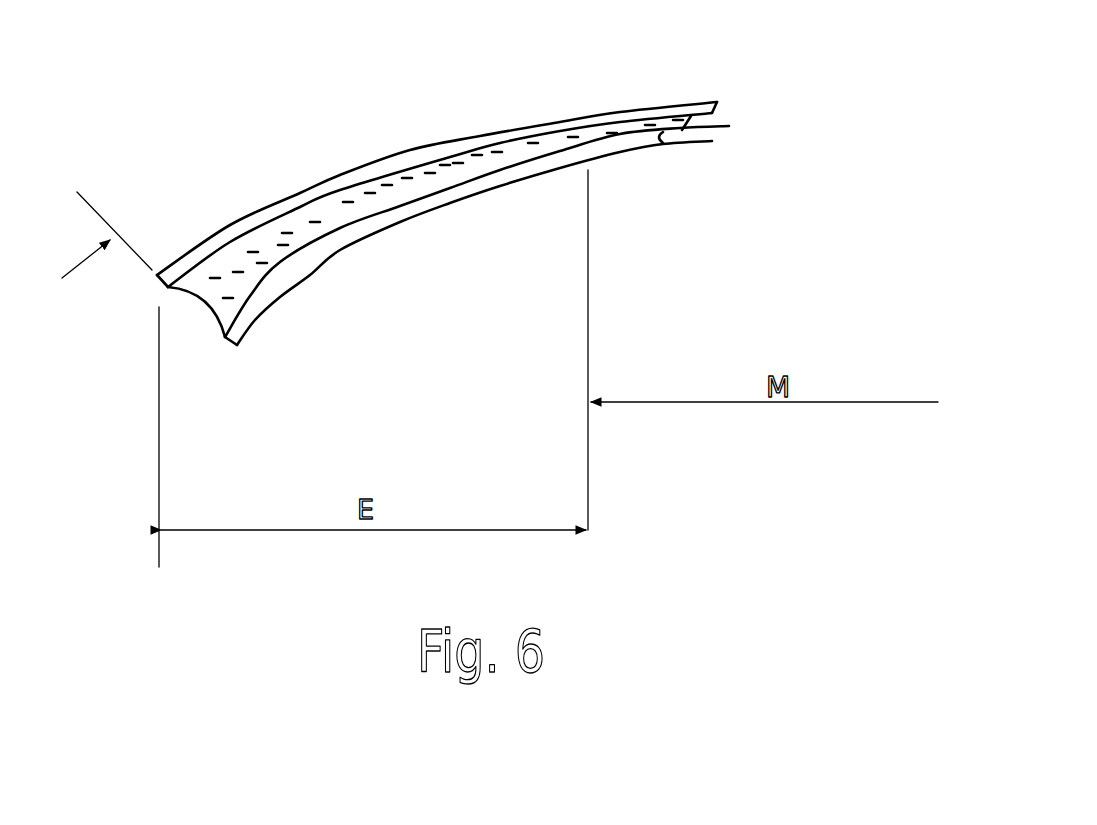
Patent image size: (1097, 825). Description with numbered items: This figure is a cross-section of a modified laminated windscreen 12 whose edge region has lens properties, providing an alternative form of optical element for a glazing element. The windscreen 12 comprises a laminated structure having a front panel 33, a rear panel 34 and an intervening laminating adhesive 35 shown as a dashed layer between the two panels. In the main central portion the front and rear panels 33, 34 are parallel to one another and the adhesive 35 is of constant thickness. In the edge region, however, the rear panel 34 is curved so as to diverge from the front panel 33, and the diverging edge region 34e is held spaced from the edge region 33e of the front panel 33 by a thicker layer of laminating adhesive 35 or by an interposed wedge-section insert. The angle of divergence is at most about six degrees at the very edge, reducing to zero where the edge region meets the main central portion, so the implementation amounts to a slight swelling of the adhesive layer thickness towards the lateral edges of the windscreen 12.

The windscreen 12 is at (266, 196).
The front panel 33 is at (713, 100).
The edge region of the front panel 33e is at (432, 155).
The rear panel 34 is at (733, 137).
The diverging edge region 34e is at (475, 180).
The laminating adhesive 35 is at (375, 192).